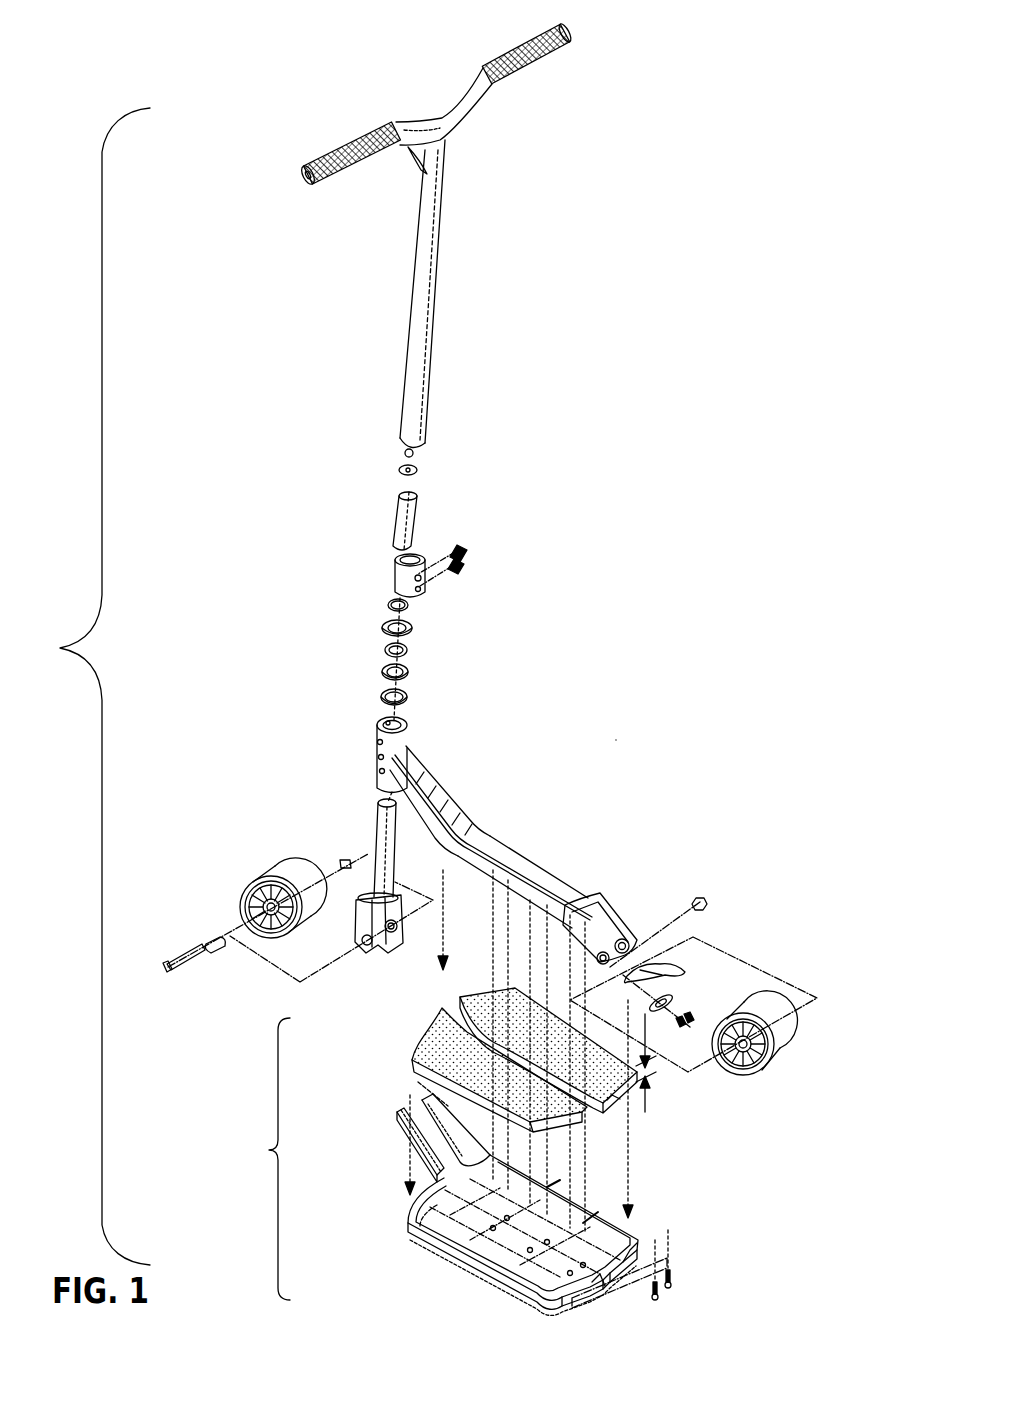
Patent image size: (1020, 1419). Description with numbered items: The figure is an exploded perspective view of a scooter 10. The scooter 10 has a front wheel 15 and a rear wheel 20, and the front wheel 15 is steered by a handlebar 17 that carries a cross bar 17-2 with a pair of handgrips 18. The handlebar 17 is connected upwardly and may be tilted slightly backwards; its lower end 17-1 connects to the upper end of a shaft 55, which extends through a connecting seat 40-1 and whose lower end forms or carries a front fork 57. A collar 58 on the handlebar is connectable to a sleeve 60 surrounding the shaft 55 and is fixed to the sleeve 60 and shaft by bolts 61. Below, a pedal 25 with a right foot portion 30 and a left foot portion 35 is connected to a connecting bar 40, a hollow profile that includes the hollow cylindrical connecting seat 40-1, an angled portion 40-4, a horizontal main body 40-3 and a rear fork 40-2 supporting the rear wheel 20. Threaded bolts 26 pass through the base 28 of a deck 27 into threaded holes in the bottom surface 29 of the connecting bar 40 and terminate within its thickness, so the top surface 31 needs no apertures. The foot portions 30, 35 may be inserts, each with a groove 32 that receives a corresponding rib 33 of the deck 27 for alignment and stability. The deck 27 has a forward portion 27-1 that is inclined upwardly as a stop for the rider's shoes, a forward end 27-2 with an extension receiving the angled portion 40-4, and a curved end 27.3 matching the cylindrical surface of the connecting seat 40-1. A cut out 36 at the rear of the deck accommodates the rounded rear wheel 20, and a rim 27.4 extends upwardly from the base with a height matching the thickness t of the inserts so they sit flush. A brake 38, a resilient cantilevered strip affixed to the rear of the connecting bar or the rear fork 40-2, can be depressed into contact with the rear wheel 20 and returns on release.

The scooter 10 is at (618, 738).
The front wheel 15 is at (276, 872).
The handlebar 17 is at (422, 318).
The lower end of the handlebar 17-1 is at (424, 437).
The cross bar 17-2 is at (448, 120).
The handgrips 18 is at (346, 157).
The rear wheel 20 is at (775, 1052).
The pedal 25 is at (258, 1159).
The threaded bolts 26 is at (660, 1292).
The deck 27 is at (648, 1215).
The forward portion of the deck 27-1 is at (447, 1218).
The forward end of the deck 27-2 is at (400, 1132).
The curved end 27.3 is at (420, 1130).
The rim 27.4 is at (637, 1250).
The base 28 is at (520, 1235).
The bottom surface of the connecting bar 29 is at (462, 872).
The right foot portion 30 is at (480, 993).
The top surface of the connecting bar 31 is at (498, 858).
The recess or groove 32 is at (445, 1100).
The rib 33 is at (412, 1218).
The left foot portion 35 is at (432, 1047).
The cut out 36 is at (597, 1275).
The brake 38 is at (672, 962).
The connecting bar 40 is at (513, 825).
The connecting seat 40-1 is at (384, 756).
The rear fork 40-2 is at (600, 912).
The main body 40-3 is at (537, 875).
The angled portion 40-4 is at (440, 795).
The shaft 55 is at (380, 848).
The front fork 57 is at (368, 930).
The collar 58 is at (395, 575).
The sleeve 60 is at (402, 520).
The bolts 61 is at (468, 560).
The thickness t is at (651, 1063).